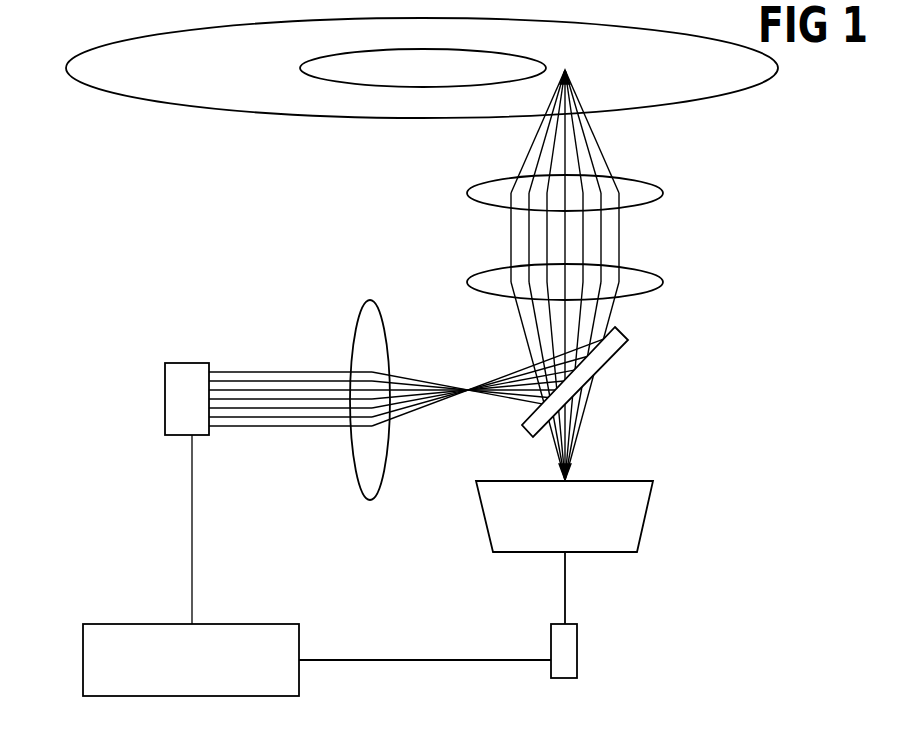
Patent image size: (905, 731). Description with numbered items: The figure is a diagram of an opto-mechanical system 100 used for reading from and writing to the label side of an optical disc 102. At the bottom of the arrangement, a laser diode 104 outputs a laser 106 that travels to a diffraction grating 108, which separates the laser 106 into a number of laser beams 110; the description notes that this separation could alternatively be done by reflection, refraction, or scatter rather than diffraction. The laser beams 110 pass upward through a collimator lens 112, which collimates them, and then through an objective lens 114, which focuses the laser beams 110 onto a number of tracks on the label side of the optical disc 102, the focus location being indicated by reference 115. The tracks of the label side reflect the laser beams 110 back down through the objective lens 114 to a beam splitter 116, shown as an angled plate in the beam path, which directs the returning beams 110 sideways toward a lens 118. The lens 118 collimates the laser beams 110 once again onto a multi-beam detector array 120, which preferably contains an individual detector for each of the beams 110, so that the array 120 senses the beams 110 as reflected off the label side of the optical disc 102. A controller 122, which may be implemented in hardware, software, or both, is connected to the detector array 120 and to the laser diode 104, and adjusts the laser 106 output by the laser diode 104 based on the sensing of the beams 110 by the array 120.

The opto-mechanical system 100 is at (729, 572).
The optical disc 102 is at (282, 108).
The laser diode 104 is at (578, 660).
The laser 106 is at (566, 588).
The diffraction grating 108 is at (655, 489).
The laser beams 110 is at (580, 440).
The collimator lens 112 is at (663, 282).
The objective lens 114 is at (663, 193).
The tracks of the label side of the optical disc 115 is at (574, 72).
The beam splitter 116 is at (628, 338).
The lens 118 is at (370, 500).
The multi-beam detector array 120 is at (165, 410).
The controller 122 is at (83, 670).